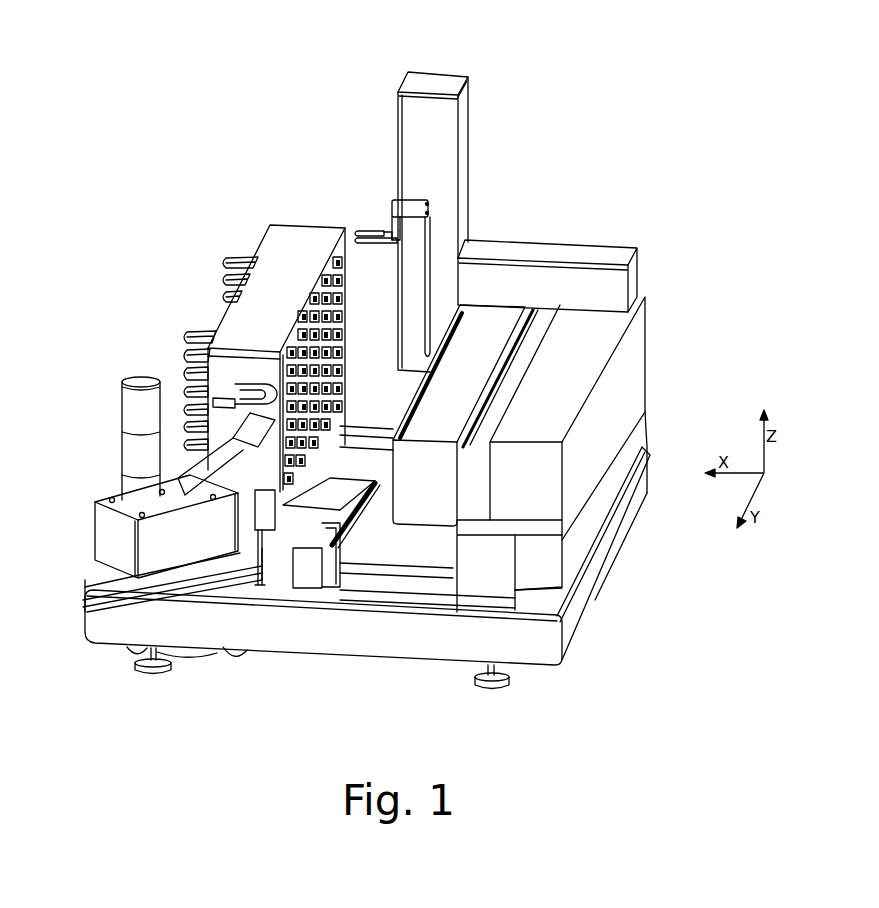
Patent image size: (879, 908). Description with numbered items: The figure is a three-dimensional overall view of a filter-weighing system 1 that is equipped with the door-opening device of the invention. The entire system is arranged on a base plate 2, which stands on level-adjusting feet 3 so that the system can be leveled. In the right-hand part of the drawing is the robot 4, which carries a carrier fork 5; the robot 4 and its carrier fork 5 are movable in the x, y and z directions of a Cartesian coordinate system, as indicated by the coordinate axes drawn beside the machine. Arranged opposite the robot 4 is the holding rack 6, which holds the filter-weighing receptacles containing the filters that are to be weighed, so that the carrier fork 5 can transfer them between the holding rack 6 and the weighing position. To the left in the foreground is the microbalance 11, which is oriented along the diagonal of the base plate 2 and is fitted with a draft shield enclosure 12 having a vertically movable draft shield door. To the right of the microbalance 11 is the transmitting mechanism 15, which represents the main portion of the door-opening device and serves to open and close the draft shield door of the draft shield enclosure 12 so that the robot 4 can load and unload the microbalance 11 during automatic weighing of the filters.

The filter-weighing system 1 is at (240, 183).
The base plate 2 is at (595, 572).
The level-adjusting feet 3 is at (140, 673).
The robot 4 is at (438, 185).
The carrier fork 5 is at (386, 232).
The holding rack 6 is at (292, 256).
The microbalance 11 is at (148, 495).
The draft shield enclosure 12 is at (262, 535).
The transmitting mechanism 15 is at (307, 575).